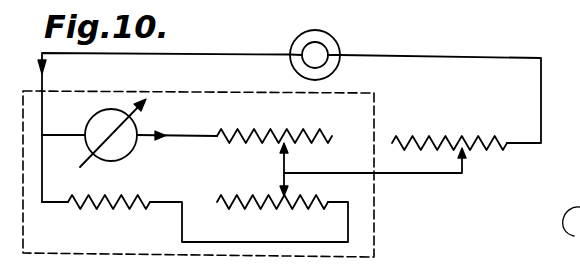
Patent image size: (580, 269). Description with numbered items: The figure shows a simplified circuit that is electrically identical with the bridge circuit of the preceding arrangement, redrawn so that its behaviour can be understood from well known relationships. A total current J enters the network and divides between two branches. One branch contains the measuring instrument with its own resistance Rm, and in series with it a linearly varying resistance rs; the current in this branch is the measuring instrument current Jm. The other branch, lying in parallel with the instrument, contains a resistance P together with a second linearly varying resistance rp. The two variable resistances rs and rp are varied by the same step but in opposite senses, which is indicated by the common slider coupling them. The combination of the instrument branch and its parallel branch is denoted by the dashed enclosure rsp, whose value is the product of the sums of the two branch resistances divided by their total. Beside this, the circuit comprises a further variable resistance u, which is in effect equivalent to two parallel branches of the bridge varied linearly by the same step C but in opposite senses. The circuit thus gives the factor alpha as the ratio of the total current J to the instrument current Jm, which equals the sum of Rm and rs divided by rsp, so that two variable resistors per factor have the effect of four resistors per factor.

The total current J is at (48, 71).
The measuring instrument resistance Rm is at (95, 133).
The measuring instrument current Jm is at (162, 126).
The series variable resistance rs is at (260, 134).
The variable resistance step C is at (332, 50).
The variable resistance u is at (457, 138).
The parallel branch resistance P is at (93, 206).
The parallel variable resistance rp is at (265, 209).
The combined series-parallel resistance rsp is at (376, 206).